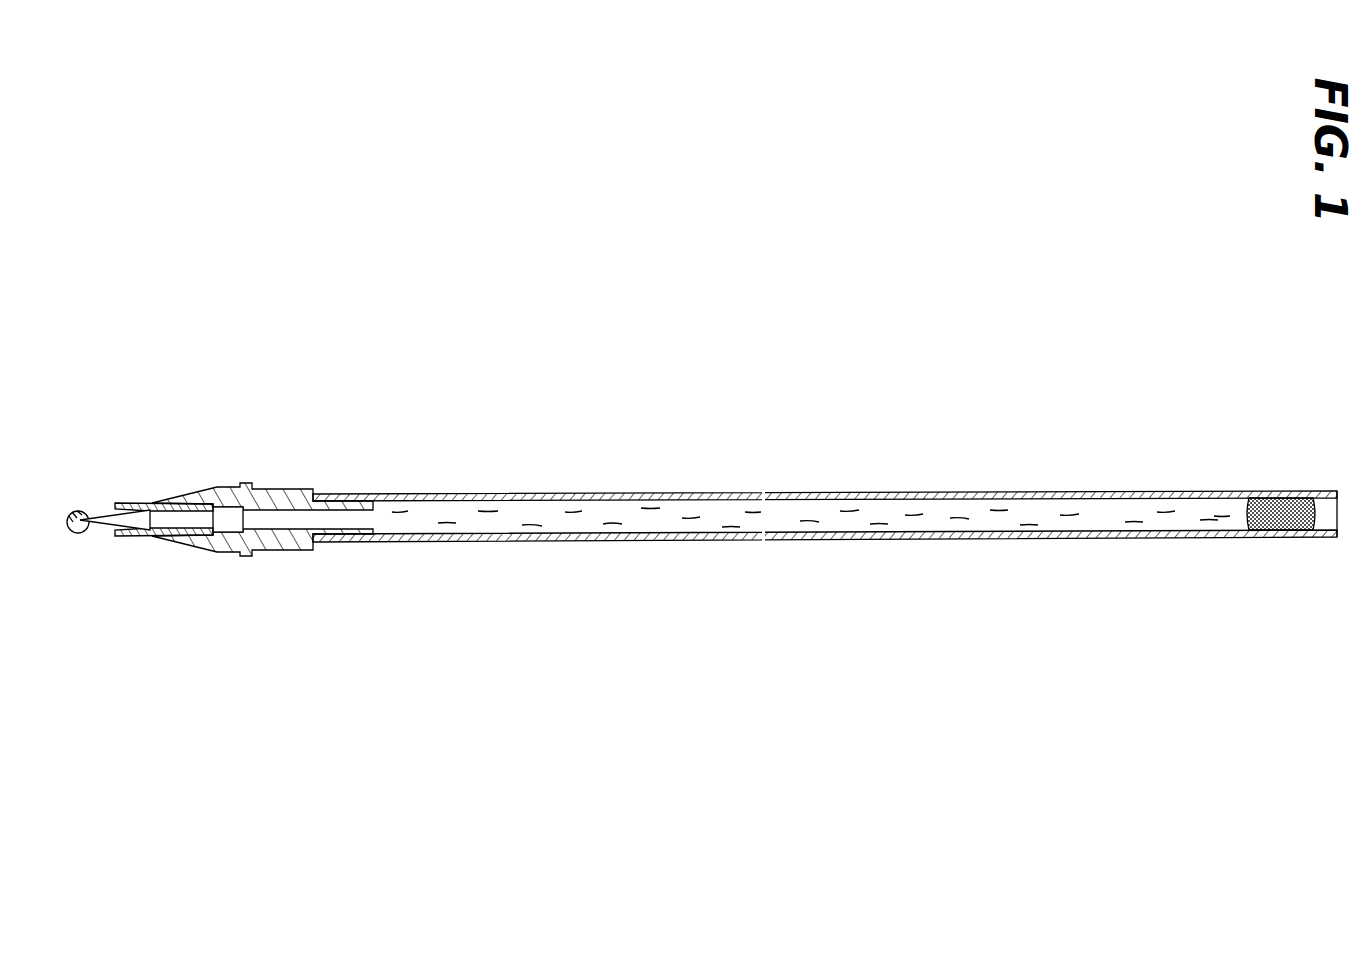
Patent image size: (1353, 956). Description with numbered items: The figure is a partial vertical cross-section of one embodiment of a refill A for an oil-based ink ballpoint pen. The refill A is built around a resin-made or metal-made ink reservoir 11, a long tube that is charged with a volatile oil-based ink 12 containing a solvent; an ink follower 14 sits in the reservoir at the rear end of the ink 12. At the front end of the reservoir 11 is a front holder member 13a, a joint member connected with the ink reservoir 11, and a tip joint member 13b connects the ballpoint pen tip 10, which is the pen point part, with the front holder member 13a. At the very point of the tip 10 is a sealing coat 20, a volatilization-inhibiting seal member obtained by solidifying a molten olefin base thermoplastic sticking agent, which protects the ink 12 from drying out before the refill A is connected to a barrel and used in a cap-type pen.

The refill for a ballpoint pen A is at (702, 503).
The ballpoint pen tip 10 is at (93, 513).
The ink reservoir 11 is at (967, 492).
The volatile oil-based ink 12 is at (1095, 512).
The front holder member 13a is at (207, 495).
The tip joint member 13b is at (150, 505).
The ink follower 14 is at (1268, 500).
The sealing coat 20 is at (80, 535).